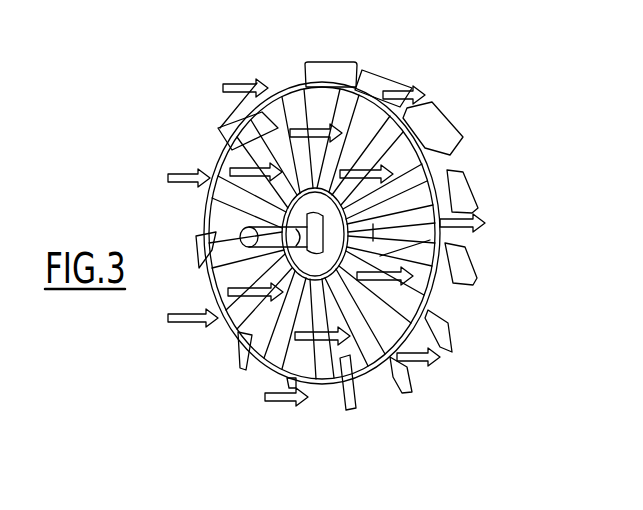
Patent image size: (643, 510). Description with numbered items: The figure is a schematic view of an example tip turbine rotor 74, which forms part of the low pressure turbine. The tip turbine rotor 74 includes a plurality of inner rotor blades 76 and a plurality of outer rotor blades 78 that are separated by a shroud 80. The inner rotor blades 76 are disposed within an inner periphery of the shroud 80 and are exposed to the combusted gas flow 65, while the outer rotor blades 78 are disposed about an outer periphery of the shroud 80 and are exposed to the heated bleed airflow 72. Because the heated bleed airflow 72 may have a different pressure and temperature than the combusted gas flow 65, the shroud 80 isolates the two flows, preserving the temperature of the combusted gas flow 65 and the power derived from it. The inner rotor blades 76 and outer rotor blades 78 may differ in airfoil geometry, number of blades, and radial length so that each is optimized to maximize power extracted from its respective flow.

The combusted gas flow 65 is at (262, 312).
The heated bleed airflow 72 is at (175, 176).
The tip turbine rotor 74 is at (505, 121).
The inner rotor blades 76 is at (407, 210).
The outer rotor blades 78 is at (462, 191).
The shroud 80 is at (448, 300).